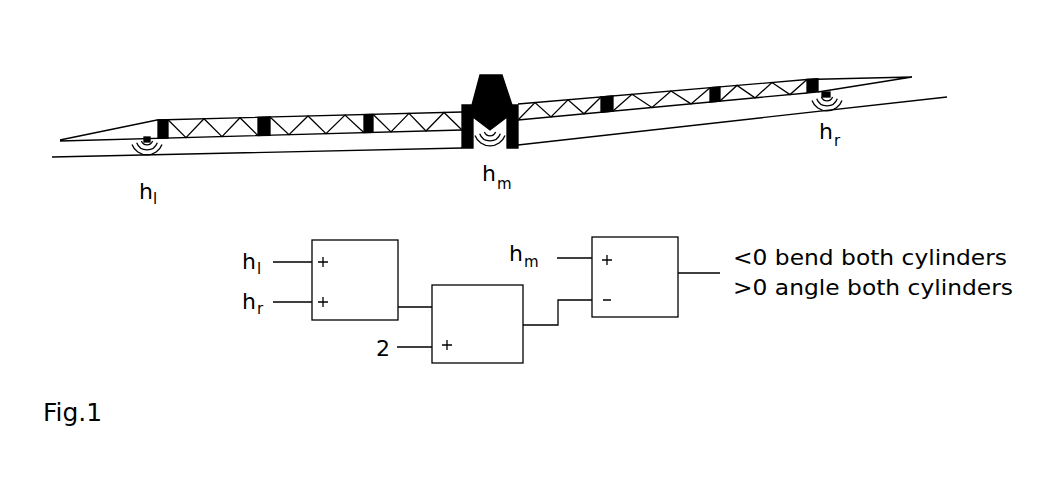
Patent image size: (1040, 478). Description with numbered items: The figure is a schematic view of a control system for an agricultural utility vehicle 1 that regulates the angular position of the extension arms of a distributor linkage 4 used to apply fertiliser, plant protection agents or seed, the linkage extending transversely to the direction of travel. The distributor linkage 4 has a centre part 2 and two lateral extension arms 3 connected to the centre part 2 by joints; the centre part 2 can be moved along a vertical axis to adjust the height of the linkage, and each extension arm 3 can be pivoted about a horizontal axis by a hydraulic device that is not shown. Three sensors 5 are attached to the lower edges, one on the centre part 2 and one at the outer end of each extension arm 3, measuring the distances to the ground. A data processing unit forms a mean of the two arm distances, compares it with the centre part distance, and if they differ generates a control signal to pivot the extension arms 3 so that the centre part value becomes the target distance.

The agricultural utility vehicle 1 is at (502, 82).
The centre part 2 is at (520, 113).
The lateral extension arm 3 is at (193, 122).
The distributor linkage 4 is at (750, 85).
The sensor 5 is at (147, 138).